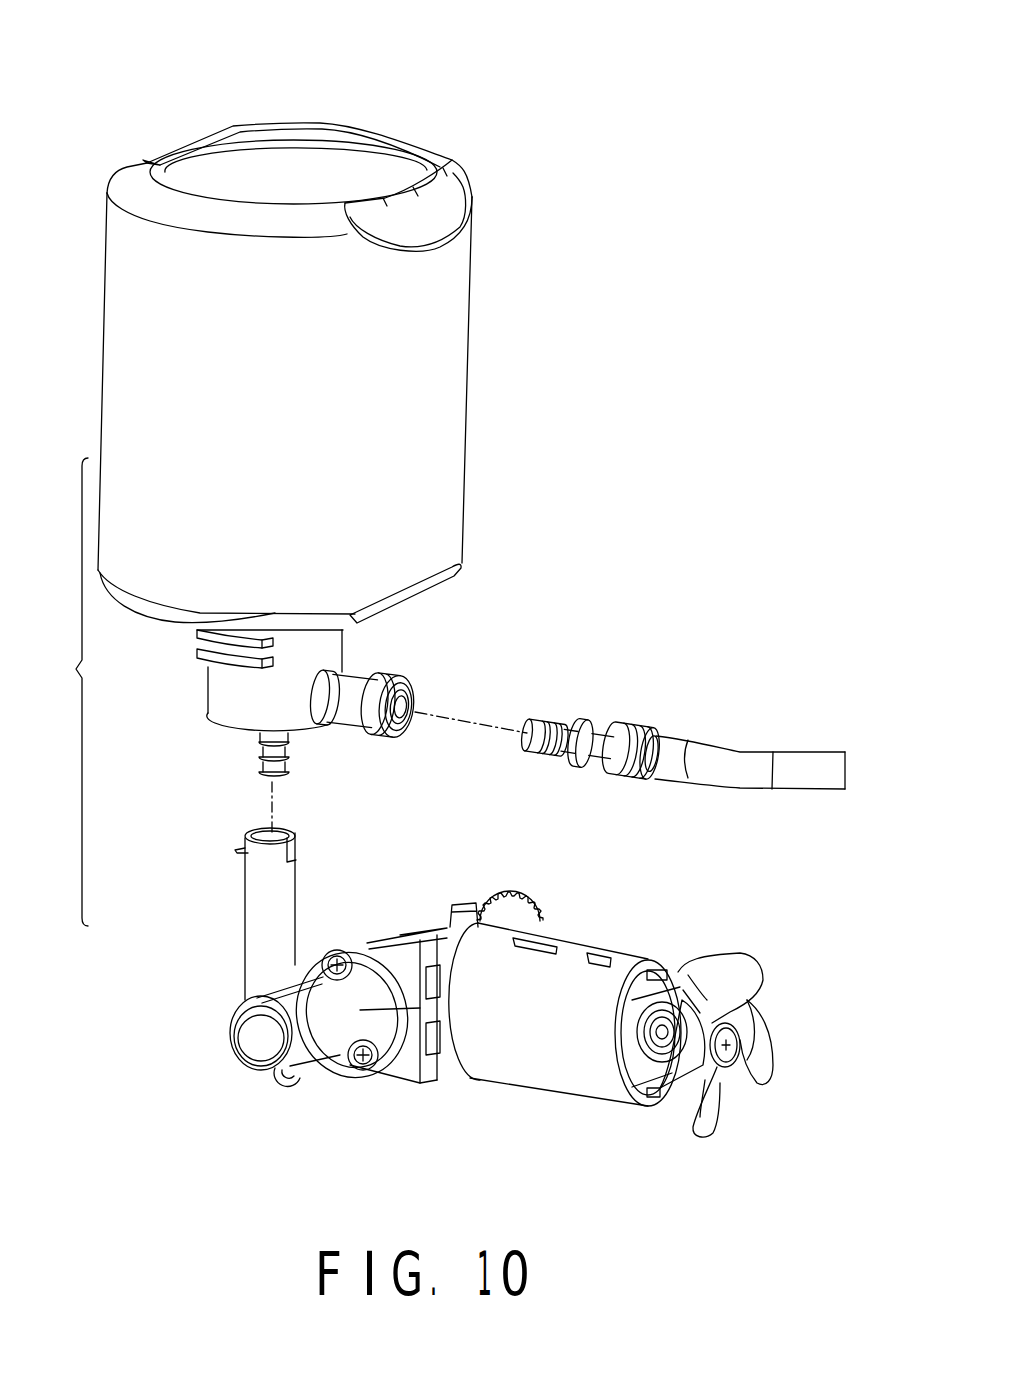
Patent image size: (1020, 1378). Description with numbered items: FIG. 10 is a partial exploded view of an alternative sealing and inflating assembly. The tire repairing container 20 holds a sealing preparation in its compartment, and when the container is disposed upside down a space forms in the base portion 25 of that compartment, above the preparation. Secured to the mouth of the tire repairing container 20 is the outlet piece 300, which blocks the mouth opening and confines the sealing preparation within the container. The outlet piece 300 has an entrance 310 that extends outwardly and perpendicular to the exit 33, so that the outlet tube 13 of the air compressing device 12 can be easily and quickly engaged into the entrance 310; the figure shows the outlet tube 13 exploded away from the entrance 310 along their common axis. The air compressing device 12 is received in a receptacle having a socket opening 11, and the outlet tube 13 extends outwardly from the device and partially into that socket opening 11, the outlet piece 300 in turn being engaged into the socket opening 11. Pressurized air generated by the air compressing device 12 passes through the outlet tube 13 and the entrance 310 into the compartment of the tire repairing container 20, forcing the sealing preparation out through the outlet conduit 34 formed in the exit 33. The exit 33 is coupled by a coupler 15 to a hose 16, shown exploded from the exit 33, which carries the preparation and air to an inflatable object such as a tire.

The socket opening 11 is at (297, 170).
The tire repairing container 20 is at (450, 372).
The base portion 25 is at (453, 178).
The outlet piece 300 is at (219, 696).
The entrance 310 is at (272, 740).
The exit 33 is at (390, 678).
The outlet conduit 34 is at (398, 714).
The coupler 15 is at (557, 722).
The hose 16 is at (733, 753).
The outlet tube 13 is at (262, 915).
The air compressing device 12 is at (563, 1060).